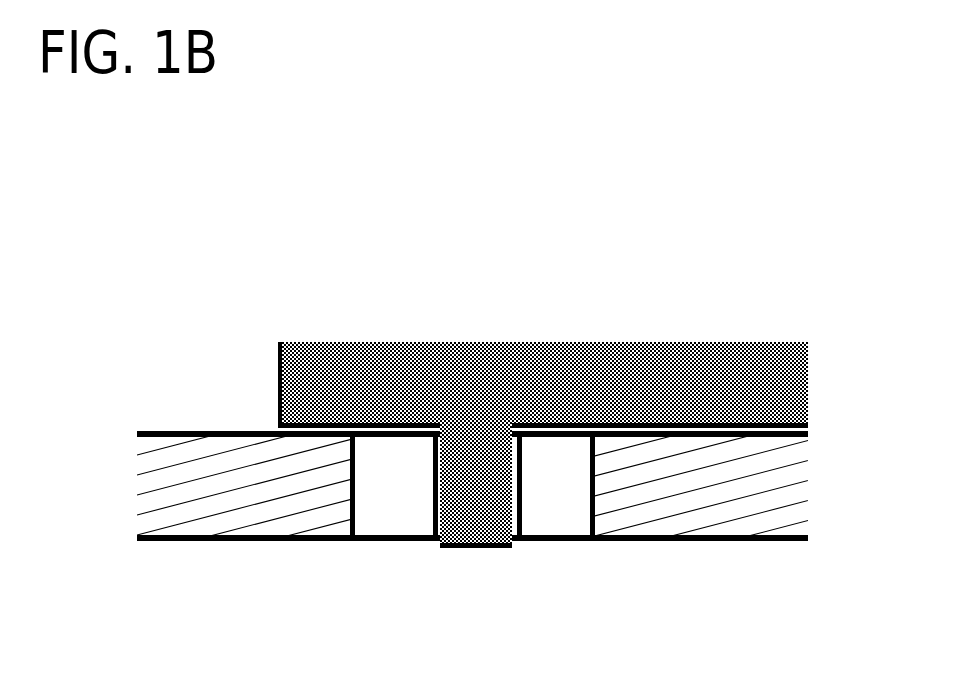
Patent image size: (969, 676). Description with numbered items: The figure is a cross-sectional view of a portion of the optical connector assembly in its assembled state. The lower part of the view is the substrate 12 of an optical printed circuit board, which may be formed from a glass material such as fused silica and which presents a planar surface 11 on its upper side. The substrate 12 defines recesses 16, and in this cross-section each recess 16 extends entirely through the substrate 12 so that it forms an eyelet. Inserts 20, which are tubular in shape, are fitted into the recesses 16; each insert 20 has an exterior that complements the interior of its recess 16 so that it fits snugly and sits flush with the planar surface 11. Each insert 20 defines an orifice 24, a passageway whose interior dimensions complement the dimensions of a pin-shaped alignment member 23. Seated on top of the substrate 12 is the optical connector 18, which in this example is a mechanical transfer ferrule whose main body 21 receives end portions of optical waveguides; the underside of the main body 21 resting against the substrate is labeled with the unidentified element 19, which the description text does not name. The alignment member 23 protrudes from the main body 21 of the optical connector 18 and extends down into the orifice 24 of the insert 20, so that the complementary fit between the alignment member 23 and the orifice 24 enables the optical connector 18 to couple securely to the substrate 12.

The planar surface 11 is at (188, 432).
The substrate 12 is at (657, 543).
The recess 16 is at (597, 541).
The optical connector 18 is at (278, 392).
The bottom surface of upper plate 19 is at (727, 428).
The insert 20 is at (397, 541).
The main body 21 is at (278, 350).
The alignment member 23 is at (478, 548).
The orifice 24 is at (513, 541).